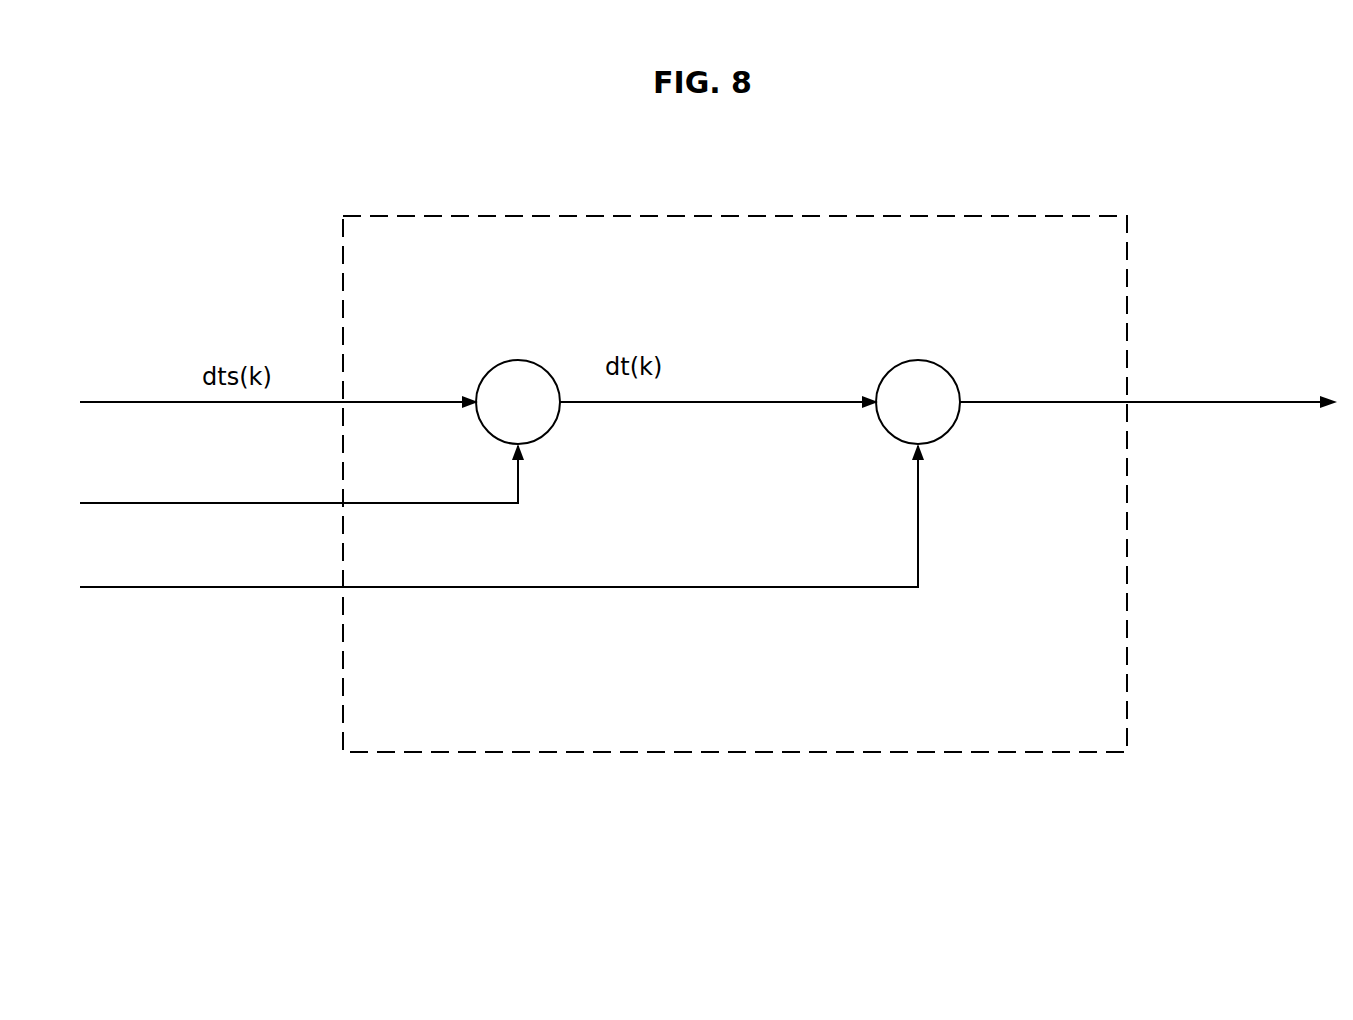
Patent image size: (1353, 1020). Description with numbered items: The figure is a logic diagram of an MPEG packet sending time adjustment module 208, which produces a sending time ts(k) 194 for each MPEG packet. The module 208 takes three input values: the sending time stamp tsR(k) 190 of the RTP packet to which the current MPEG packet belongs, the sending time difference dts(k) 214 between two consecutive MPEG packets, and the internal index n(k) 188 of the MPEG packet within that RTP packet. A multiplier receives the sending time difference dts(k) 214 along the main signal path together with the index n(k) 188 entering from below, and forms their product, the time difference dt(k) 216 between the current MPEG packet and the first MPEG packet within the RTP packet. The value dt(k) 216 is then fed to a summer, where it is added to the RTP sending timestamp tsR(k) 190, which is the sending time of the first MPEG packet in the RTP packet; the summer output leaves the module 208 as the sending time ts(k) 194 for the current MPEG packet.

The MPEG packet sending time adjustment module 208 is at (460, 683).
The sending time difference dts(k) 214 is at (393, 402).
The time difference dt(k) 216 is at (708, 402).
The sending time ts(k) 194 is at (1272, 400).
The internal index n(k) 188 is at (518, 484).
The sending time stamp tsR(k) 190 is at (793, 589).